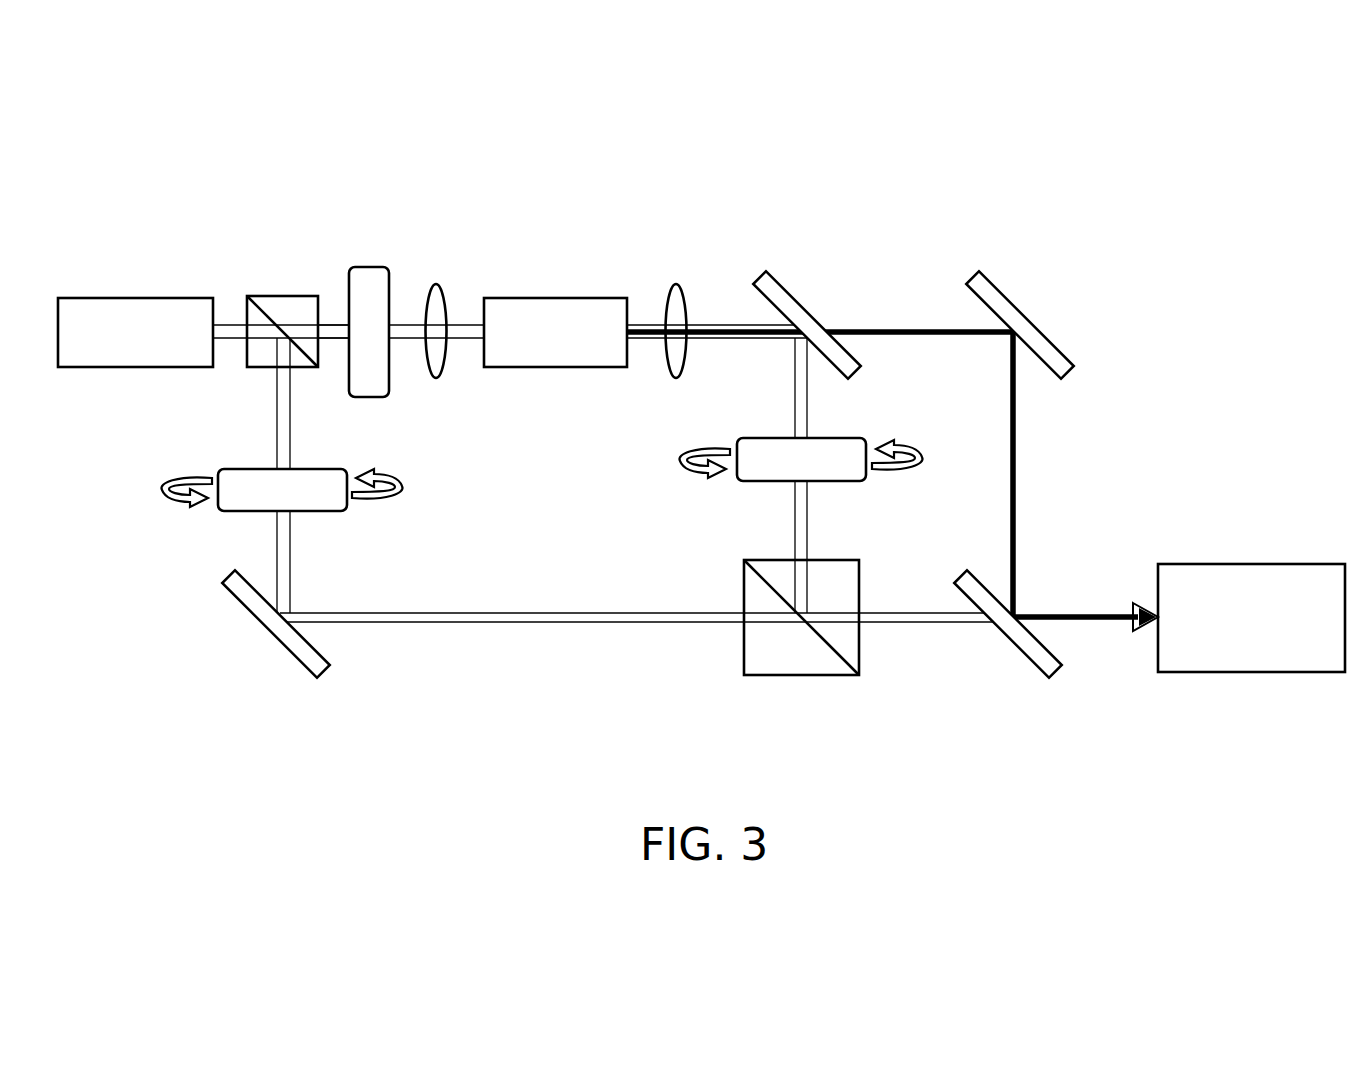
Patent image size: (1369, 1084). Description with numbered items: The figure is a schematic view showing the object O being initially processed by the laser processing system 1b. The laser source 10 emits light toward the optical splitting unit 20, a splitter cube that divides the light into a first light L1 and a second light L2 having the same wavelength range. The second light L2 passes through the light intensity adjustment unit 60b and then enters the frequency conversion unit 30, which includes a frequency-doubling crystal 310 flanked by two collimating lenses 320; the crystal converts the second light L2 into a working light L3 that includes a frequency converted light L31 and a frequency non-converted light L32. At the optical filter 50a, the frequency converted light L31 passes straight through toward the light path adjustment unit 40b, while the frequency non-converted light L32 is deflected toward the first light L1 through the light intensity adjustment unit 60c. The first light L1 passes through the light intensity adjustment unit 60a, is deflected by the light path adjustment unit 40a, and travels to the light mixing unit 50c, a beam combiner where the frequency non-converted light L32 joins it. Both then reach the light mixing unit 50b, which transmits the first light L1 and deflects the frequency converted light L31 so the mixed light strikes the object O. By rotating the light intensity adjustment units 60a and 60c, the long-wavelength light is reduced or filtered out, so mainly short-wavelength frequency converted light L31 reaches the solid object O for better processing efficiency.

The laser processing system 1b is at (105, 163).
The laser source 10 is at (137, 297).
The optical splitting unit 20 is at (277, 296).
The first light L1 is at (282, 425).
The second light L2 is at (334, 326).
The frequency conversion unit 30 is at (703, 221).
The collimating lens 320 is at (436, 283).
The frequency-doubling crystal 310 is at (556, 298).
The working light L3 is at (907, 221).
The frequency converted light L31 is at (885, 330).
The frequency non-converted light L32 is at (800, 395).
The light path adjustment unit 40a is at (287, 650).
The light path adjustment unit 40b is at (1045, 333).
The optical filter 50a is at (852, 372).
The light mixing unit 50b is at (1017, 650).
The light mixing unit 50c is at (744, 585).
The light intensity adjustment unit 60a is at (250, 512).
The light intensity adjustment unit 60b is at (389, 373).
The light intensity adjustment unit 60c is at (837, 482).
The object O is at (1252, 564).